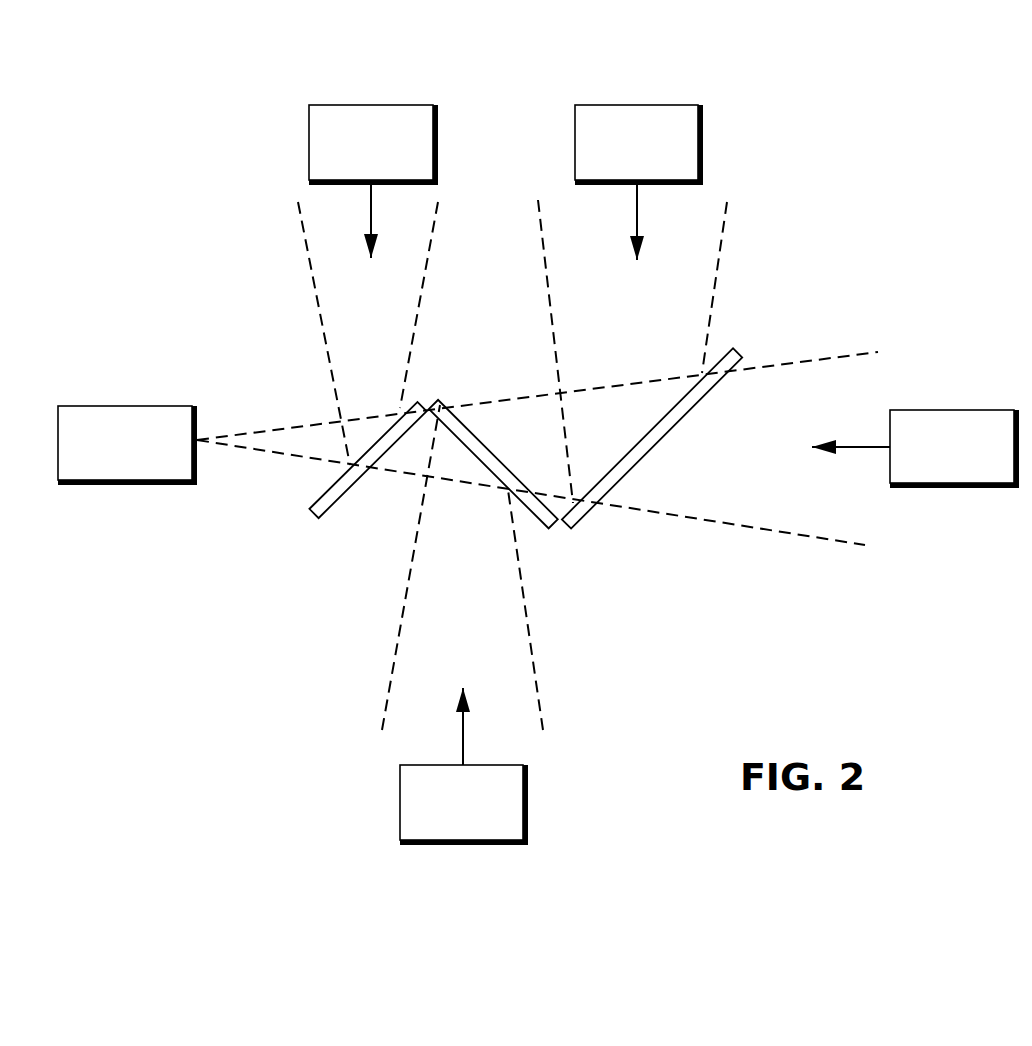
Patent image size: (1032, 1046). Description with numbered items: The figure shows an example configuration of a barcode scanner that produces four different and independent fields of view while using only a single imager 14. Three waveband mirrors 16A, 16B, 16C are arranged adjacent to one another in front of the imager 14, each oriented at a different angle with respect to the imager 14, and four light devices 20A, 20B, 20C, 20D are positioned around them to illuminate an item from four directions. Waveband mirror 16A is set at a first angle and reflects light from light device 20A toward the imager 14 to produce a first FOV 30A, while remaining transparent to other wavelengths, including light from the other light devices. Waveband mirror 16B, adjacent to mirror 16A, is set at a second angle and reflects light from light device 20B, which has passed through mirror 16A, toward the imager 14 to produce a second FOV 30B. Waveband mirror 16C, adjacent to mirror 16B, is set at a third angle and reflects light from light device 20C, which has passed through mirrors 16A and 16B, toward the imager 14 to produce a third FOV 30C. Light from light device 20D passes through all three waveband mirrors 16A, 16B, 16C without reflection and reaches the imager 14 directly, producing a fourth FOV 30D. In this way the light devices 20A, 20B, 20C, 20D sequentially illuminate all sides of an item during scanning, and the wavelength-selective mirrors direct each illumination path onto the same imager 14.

The imager 14 is at (112, 405).
The waveband mirror 16A is at (310, 508).
The waveband mirror 16B is at (446, 398).
The waveband mirror 16C is at (582, 523).
The light device 20A is at (369, 104).
The light device 20B is at (468, 846).
The light device 20C is at (647, 104).
The light device 20D is at (962, 409).
The first FOV 30A is at (318, 315).
The second FOV 30B is at (393, 670).
The third FOV 30C is at (718, 262).
The fourth FOV 30D is at (797, 538).